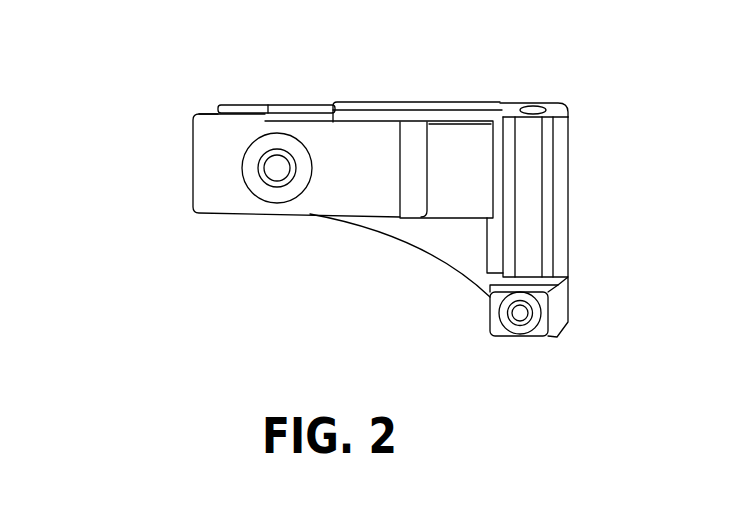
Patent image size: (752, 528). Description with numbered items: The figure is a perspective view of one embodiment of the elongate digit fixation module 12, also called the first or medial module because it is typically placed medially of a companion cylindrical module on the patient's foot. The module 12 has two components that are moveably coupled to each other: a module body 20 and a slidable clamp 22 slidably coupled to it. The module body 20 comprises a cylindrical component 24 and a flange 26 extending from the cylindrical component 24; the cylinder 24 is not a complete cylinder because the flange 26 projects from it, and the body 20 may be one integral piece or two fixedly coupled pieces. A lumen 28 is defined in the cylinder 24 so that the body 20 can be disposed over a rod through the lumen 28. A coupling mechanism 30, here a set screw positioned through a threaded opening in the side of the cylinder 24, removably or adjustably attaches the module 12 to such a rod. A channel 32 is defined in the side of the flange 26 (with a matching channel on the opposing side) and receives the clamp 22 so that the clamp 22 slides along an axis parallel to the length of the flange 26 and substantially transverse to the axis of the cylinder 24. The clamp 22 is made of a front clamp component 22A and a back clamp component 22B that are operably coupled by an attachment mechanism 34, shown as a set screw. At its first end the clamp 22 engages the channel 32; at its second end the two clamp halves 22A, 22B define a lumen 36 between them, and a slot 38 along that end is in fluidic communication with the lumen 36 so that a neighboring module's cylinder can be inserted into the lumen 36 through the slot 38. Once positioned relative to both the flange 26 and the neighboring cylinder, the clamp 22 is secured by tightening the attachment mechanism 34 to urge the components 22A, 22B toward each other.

The elongate digit fixation module 12 is at (110, 98).
The module body 20 is at (464, 122).
The slidable clamp 22 is at (313, 110).
The front clamp component 22A is at (207, 117).
The back clamp component 22B is at (240, 104).
The cylindrical component 24 is at (548, 240).
The flange 26 is at (433, 235).
The lumen 28 is at (533, 105).
The coupling mechanism 30 is at (530, 338).
The channel 32 is at (448, 158).
The attachment mechanism 34 is at (280, 203).
The lumen 36 is at (258, 105).
The slot 38 is at (200, 110).